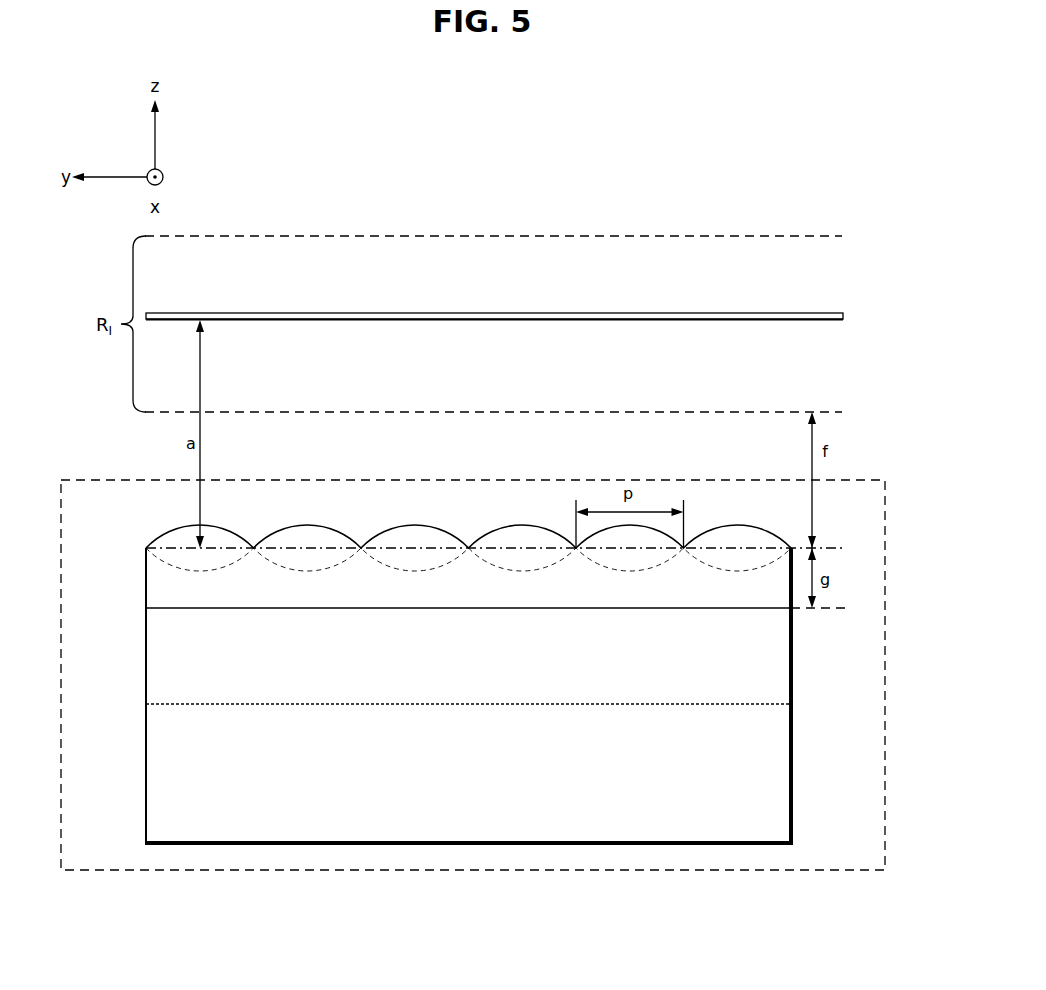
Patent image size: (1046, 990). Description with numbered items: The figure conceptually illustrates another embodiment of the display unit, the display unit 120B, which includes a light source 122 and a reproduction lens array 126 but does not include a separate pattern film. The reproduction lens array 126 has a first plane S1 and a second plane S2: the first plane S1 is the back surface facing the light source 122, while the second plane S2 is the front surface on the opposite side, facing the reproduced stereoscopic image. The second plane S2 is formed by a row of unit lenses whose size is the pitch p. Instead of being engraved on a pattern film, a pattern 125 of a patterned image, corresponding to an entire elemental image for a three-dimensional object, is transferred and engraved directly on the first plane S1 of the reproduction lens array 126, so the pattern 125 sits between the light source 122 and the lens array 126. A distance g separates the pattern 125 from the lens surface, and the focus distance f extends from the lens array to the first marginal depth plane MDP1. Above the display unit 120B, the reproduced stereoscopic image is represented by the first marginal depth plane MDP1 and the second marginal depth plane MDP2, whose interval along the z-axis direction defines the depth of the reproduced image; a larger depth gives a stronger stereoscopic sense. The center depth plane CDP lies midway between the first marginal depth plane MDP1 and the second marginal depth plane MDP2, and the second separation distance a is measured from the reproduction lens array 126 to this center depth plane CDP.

The display unit 120B is at (840, 872).
The light source 122 is at (146, 704).
The pattern 125 is at (146, 608).
The reproduction lens array 126 is at (146, 577).
The first plane S1 is at (792, 610).
The second plane S2 is at (738, 525).
The center depth plane CDP is at (832, 313).
The first marginal depth plane MDP1 is at (830, 412).
The second marginal depth plane MDP2 is at (830, 236).